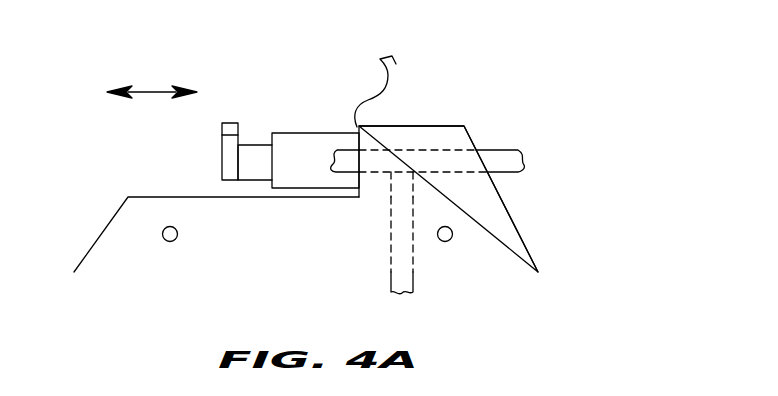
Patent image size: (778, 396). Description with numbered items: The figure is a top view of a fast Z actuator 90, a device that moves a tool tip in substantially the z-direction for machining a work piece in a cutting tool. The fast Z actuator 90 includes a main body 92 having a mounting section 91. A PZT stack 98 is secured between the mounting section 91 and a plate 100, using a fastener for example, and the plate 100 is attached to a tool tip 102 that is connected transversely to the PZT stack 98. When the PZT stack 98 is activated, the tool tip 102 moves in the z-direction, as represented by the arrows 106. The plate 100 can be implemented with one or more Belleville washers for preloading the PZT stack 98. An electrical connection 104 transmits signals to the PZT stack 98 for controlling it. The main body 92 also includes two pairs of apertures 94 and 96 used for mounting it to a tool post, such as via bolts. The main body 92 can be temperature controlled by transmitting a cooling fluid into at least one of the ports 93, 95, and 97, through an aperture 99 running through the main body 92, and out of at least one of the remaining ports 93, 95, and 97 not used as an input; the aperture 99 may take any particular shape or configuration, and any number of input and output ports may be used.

The fast Z actuator 90 is at (575, 172).
The mounting section 91 is at (453, 140).
The main body 92 is at (503, 240).
The port 93 is at (510, 150).
The apertures 94 is at (445, 242).
The port 95 is at (390, 283).
The apertures 96 is at (170, 242).
The port 97 is at (345, 150).
The PZT stack 98 is at (305, 140).
The aperture 99 is at (398, 162).
The plate 100 is at (254, 150).
The tool tip 102 is at (222, 162).
The electrical connection 104 is at (397, 72).
The arrows 106 is at (140, 92).